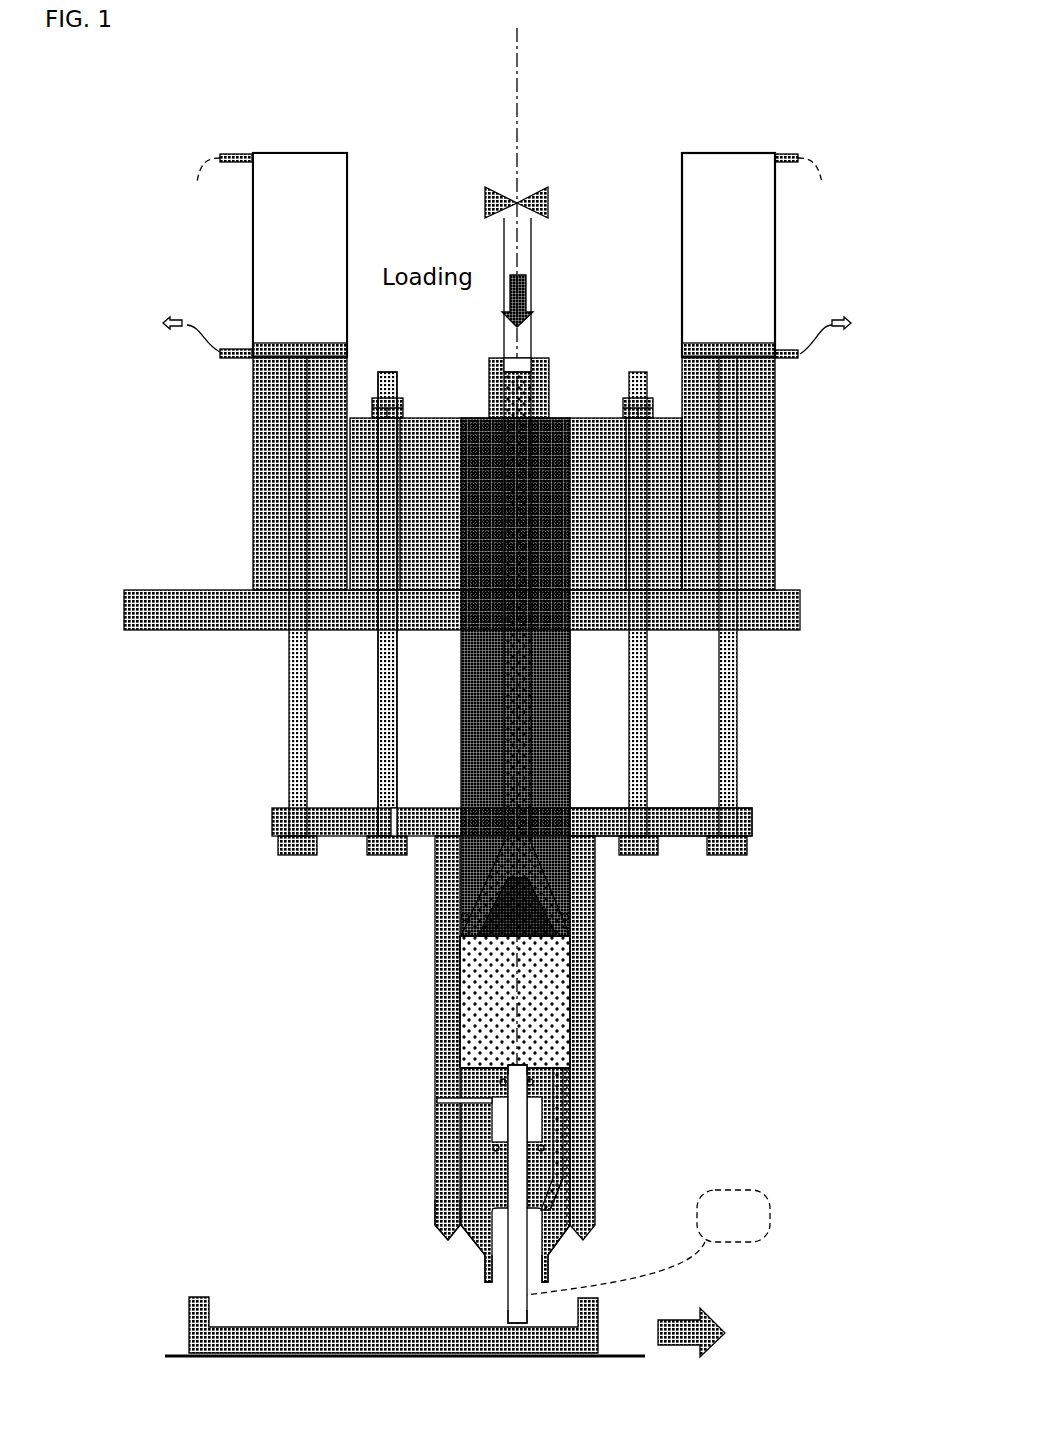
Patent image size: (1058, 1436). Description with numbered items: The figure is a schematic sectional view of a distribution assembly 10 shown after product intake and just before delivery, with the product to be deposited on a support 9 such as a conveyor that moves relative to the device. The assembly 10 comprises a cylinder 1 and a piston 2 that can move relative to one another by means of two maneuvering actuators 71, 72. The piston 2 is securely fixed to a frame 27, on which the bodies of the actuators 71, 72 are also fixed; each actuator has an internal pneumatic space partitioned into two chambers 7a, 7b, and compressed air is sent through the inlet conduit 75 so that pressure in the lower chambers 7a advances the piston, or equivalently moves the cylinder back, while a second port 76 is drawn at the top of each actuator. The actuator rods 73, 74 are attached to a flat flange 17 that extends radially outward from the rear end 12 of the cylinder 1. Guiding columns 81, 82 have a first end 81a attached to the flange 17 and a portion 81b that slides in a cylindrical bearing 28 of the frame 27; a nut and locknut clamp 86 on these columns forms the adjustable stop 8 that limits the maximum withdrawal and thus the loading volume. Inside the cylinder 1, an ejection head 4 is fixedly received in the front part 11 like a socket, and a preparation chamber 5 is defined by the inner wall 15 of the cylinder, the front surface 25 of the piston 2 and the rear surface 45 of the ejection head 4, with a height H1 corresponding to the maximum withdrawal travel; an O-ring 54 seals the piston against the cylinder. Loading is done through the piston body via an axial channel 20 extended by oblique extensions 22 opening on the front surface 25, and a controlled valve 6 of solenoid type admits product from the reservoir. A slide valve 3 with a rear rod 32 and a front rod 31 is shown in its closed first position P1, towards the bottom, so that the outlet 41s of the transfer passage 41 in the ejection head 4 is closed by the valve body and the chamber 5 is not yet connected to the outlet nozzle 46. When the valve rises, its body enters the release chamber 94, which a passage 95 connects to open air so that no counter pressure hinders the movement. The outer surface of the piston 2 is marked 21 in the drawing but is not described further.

The cylinder 1 is at (533, 1038).
The piston 2 is at (513, 659).
The slide valve 3 is at (559, 1182).
The ejection head 4 is at (509, 1154).
The preparation chamber 5 is at (492, 1013).
The controlled valve 6 is at (476, 200).
The lower chamber 7a is at (347, 350).
The upper chamber 7b is at (318, 247).
The adjustable stop 8 is at (425, 586).
The support 9 is at (262, 1322).
The distribution assembly 10 is at (846, 1008).
The front part 11 is at (445, 1212).
The rear end 12 is at (445, 843).
The inner wall 15 is at (570, 1018).
The flange 17 is at (692, 824).
The axial channel 20 is at (512, 725).
The outer surface of body 21 is at (572, 752).
The extension on a bias 22 is at (490, 893).
The front surface 25 is at (537, 938).
The frame 27 is at (222, 610).
The cylindrical bearing 28 is at (403, 547).
The front rod 31 is at (522, 1323).
The rear rod 32 is at (527, 1073).
The transfer passage 41 is at (562, 1140).
The outlet of the transfer passage 41s is at (547, 1190).
The rear surface 45 is at (487, 1066).
The outlet nozzle 46 is at (483, 1253).
The O-ring 54 is at (572, 916).
The maneuvering actuator 71 is at (250, 257).
The maneuvering actuator 72 is at (778, 266).
The actuator rod 73 is at (286, 676).
The actuator rod 74 is at (740, 710).
The inlet conduit 75 is at (238, 360).
The upper port 76 is at (232, 153).
The guiding column 81 is at (374, 692).
The first end 81a is at (388, 824).
The portion 81b is at (387, 472).
The guiding column 82 is at (650, 721).
The nut and locknut clamp 86 is at (405, 406).
The release chamber 94 is at (493, 1125).
The passage 95 is at (453, 1100).
The height H1 is at (450, 1065).
The first position P1 is at (648, 1242).